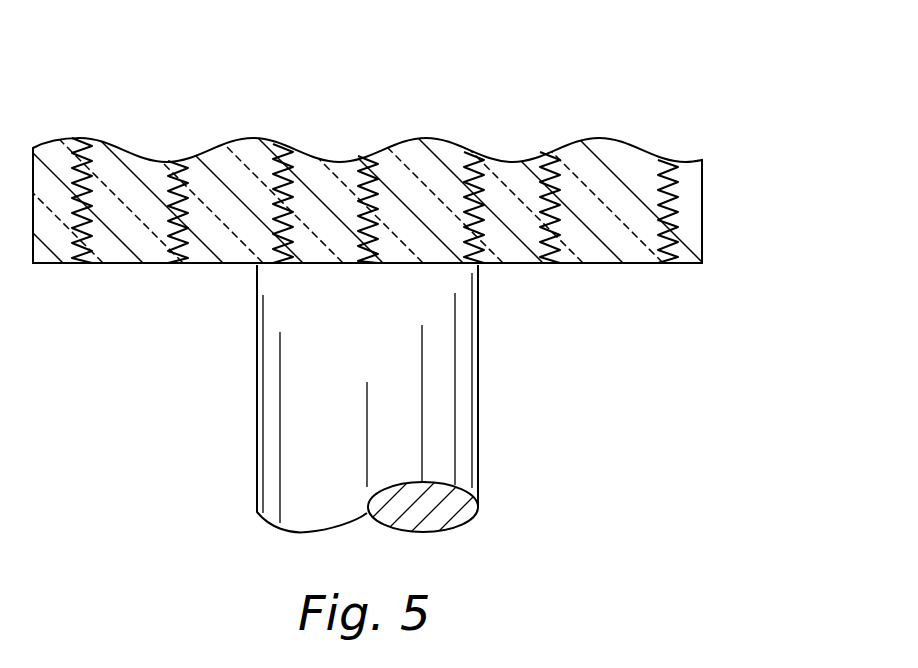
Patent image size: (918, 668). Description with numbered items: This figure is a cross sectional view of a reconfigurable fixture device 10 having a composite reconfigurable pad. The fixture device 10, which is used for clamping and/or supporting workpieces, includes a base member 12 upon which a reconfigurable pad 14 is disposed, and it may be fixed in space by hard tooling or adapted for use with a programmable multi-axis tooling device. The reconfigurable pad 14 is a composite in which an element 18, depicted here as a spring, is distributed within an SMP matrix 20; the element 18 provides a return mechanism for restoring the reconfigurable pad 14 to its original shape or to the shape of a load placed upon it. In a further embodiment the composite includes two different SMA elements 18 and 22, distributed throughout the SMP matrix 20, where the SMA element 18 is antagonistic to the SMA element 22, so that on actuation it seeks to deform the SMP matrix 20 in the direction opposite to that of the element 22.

The reconfigurable fixture device 10 is at (183, 72).
The base member 12 is at (445, 408).
The reconfigurable pad 14 is at (703, 200).
The element 18 is at (563, 183).
The SMP matrix 20 is at (148, 253).
The SMA element 22 is at (297, 186).